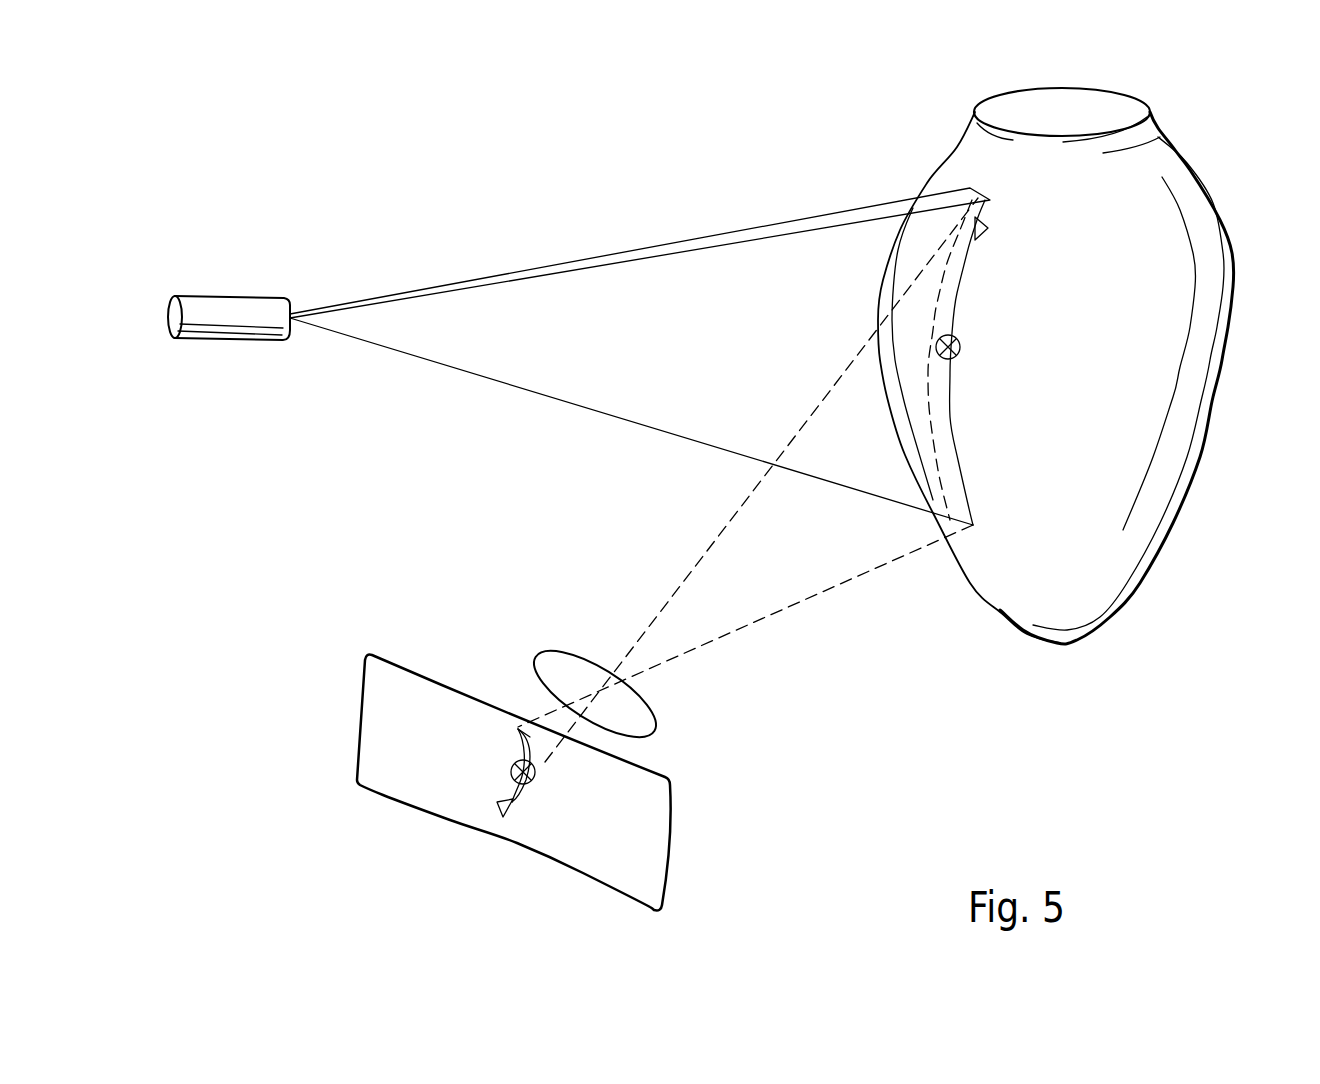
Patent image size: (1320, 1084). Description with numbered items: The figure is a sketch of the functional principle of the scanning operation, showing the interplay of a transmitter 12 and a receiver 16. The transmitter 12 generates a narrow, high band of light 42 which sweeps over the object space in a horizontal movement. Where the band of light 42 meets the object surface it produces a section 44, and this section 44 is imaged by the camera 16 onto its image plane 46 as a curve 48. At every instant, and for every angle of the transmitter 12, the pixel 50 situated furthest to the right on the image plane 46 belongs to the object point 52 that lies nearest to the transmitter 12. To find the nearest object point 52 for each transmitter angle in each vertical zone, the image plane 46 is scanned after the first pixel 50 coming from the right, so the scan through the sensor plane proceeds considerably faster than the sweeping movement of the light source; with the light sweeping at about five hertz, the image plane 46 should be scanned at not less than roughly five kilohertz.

The transmitter 12 is at (268, 307).
The receiver 16 is at (718, 750).
The band of light 42 is at (755, 259).
The section 44 is at (957, 255).
The image plane 46 is at (650, 898).
The curve 48 is at (520, 803).
The pixel 50 is at (535, 780).
The object point 52 is at (960, 347).